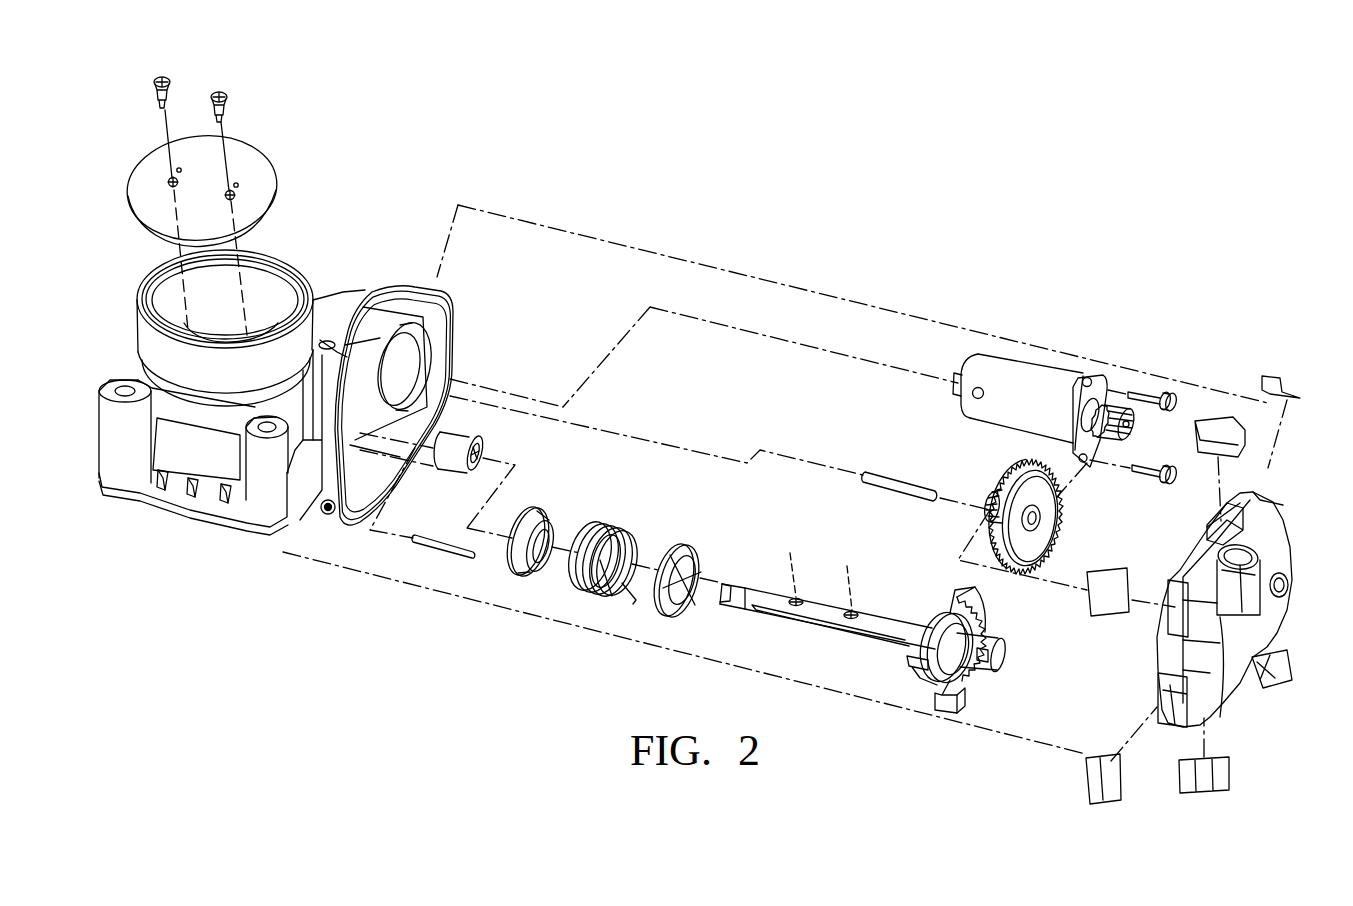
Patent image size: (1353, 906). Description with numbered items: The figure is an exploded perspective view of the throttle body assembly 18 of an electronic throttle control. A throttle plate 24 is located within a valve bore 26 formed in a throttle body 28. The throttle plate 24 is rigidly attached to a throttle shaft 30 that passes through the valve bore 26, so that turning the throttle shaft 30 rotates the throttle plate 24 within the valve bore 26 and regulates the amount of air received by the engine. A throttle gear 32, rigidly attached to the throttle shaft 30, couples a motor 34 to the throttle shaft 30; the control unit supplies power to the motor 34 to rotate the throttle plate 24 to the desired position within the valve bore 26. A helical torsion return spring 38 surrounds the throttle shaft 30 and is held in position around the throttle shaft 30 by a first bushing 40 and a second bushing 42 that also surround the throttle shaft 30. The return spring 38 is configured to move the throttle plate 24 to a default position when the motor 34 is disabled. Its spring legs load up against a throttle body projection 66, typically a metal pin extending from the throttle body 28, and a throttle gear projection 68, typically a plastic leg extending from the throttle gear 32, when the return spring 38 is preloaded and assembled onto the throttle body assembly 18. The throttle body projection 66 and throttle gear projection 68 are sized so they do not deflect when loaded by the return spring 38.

The throttle body assembly 18 is at (864, 230).
The throttle plate 24 is at (256, 153).
The valve bore 26 is at (282, 297).
The throttle body 28 is at (340, 315).
The throttle shaft 30 is at (877, 623).
The throttle gear 32 is at (990, 627).
The motor 34 is at (1020, 372).
The helical torsion return spring 38 is at (616, 527).
The first bushing 40 is at (538, 520).
The second bushing 42 is at (690, 551).
The throttle body projection 66 is at (430, 546).
The throttle gear projection 68 is at (913, 662).